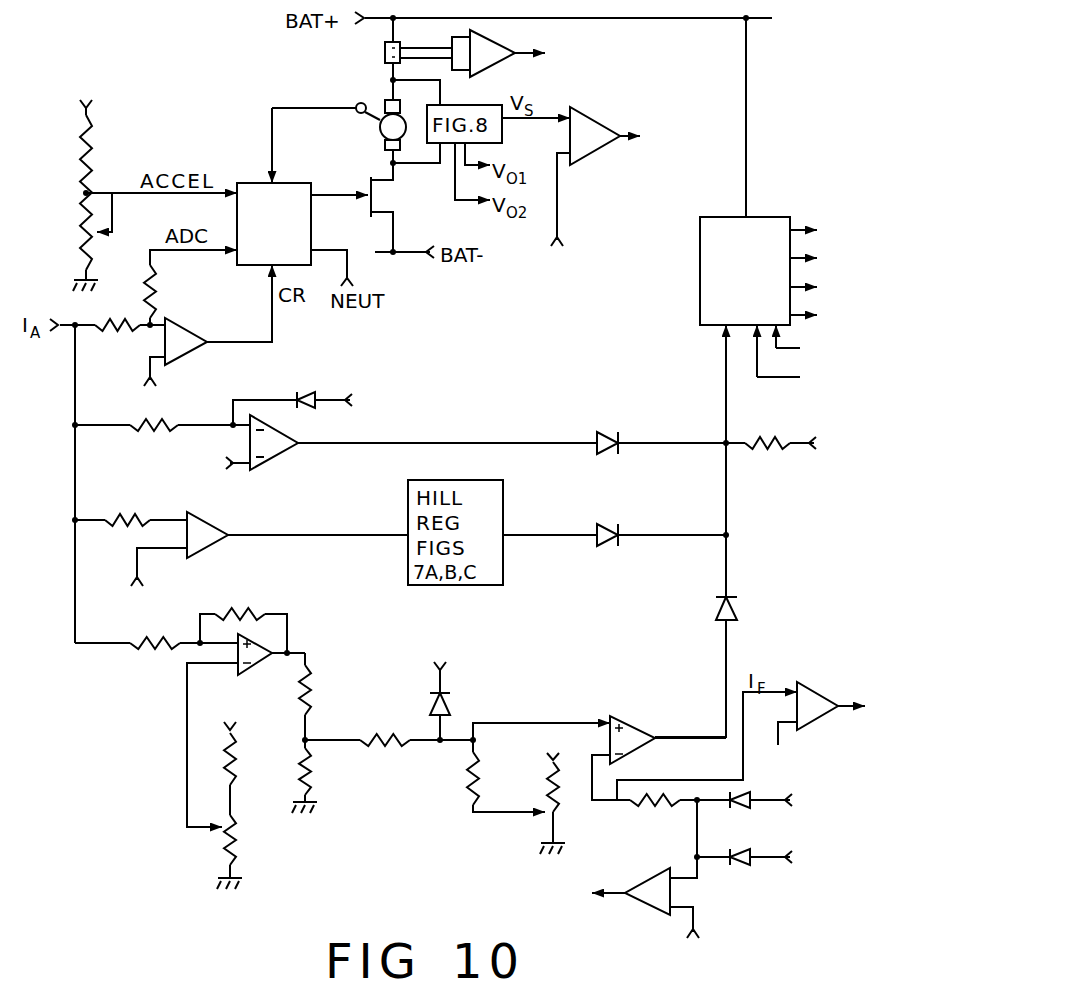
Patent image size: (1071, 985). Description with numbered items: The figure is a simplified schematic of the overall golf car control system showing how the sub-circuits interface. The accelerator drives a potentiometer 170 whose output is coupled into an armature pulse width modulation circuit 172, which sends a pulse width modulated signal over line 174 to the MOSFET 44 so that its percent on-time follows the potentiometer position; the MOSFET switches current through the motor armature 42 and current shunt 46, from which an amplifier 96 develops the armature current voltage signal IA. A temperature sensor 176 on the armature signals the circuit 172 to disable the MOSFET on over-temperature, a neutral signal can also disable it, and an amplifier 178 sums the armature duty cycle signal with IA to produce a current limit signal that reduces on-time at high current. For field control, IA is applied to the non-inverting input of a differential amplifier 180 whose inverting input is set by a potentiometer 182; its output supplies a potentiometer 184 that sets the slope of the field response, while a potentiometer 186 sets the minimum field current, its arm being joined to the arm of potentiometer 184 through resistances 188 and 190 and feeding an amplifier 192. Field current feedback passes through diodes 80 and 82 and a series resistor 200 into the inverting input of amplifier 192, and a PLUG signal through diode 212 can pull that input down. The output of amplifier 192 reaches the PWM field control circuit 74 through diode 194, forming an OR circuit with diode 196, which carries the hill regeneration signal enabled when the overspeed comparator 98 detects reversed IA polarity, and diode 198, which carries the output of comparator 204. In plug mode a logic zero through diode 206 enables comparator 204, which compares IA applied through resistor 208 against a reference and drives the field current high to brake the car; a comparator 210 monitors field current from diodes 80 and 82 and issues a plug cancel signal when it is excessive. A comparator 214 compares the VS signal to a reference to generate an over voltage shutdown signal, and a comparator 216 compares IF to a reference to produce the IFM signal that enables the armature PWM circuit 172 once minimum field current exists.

The potentiometer 170 is at (85, 236).
The armature pulse width modulation circuit 172 is at (247, 183).
The line 174 is at (340, 185).
The temperature sensor 176 is at (356, 117).
The motor armature 42 is at (383, 101).
The MOSFET 44 is at (380, 193).
The current shunt 46 is at (383, 52).
The amplifier 96 is at (498, 68).
The comparator 214 is at (605, 155).
The PWM field control circuit 74 is at (768, 217).
The amplifier 178 is at (193, 318).
The diode 206 is at (304, 393).
The comparator 204 is at (296, 430).
The resistor 208 is at (143, 430).
The diode 198 is at (606, 432).
The diode 196 is at (597, 524).
The diode 194 is at (712, 604).
The comparator 98 is at (210, 527).
The differential amplifier 180 is at (262, 664).
The potentiometer 182 is at (238, 843).
The potentiometer 184 is at (315, 762).
The potentiometer 186 is at (548, 790).
The resistance 188 is at (400, 750).
The resistance 190 is at (465, 792).
The diode 212 is at (450, 694).
The amplifier 192 is at (636, 700).
The series resistor 200 is at (656, 824).
The comparator 216 is at (822, 690).
The diode 80 is at (735, 808).
The diode 82 is at (735, 865).
The comparator 210 is at (638, 912).